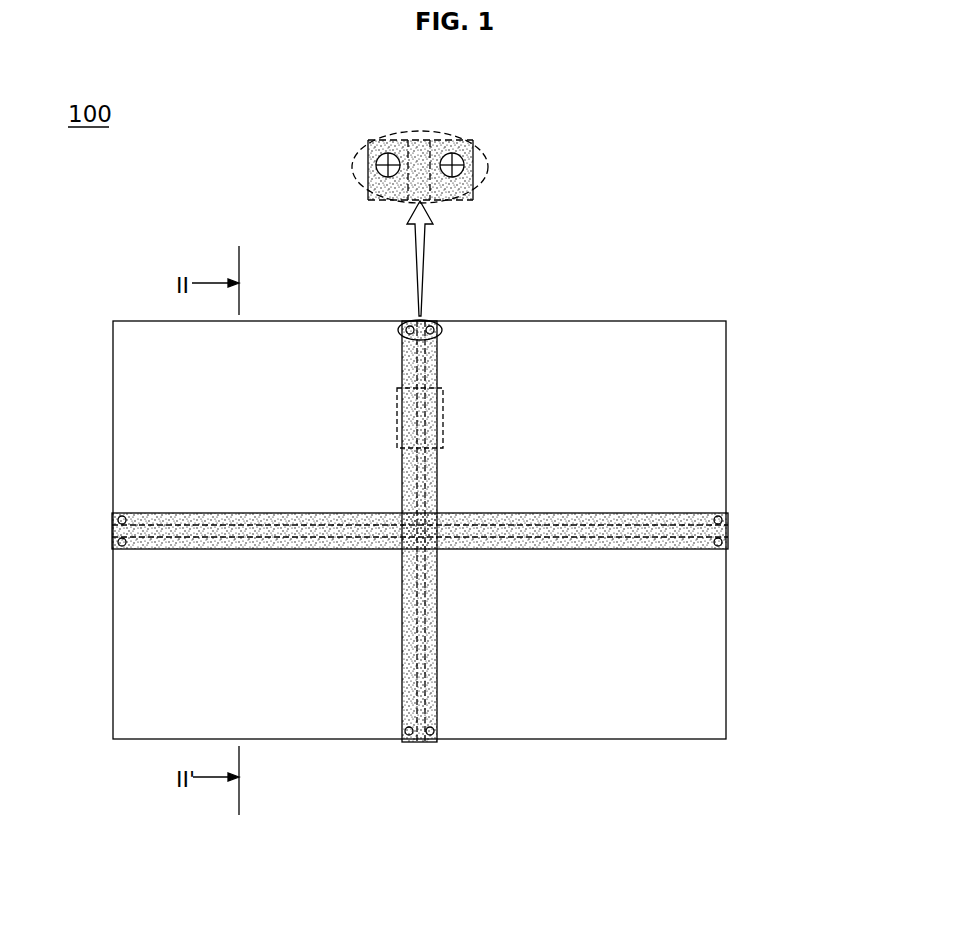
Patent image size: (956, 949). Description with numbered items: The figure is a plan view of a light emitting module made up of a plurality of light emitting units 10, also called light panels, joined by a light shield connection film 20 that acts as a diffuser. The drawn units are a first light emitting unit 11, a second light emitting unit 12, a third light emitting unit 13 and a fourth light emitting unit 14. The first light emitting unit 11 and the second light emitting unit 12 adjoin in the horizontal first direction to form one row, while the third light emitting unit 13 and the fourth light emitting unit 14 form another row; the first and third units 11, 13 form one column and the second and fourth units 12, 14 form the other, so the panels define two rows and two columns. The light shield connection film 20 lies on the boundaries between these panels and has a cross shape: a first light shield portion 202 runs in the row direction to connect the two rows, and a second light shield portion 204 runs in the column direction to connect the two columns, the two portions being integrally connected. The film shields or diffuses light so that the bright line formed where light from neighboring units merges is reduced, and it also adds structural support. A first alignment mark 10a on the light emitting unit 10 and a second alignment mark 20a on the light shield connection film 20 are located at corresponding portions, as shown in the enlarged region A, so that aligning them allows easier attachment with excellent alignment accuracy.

The light emitting unit 10 is at (803, 383).
The first light emitting unit 11 is at (647, 390).
The second light emitting unit 12 is at (362, 375).
The third light emitting unit 13 is at (362, 598).
The fourth light emitting unit 14 is at (647, 580).
The light shield connection film 20 is at (380, 562).
The first light shield portion 202 is at (212, 549).
The second light shield portion 204 is at (402, 657).
The first alignment mark 10a is at (455, 160).
The second alignment mark 20a is at (453, 166).
The enlarged region A is at (397, 418).